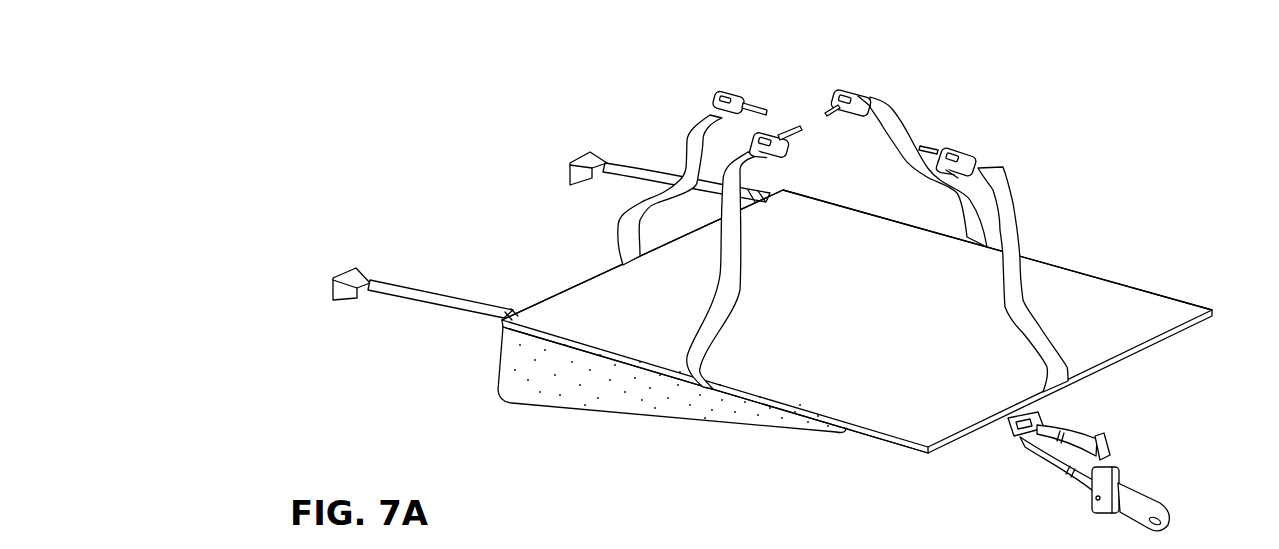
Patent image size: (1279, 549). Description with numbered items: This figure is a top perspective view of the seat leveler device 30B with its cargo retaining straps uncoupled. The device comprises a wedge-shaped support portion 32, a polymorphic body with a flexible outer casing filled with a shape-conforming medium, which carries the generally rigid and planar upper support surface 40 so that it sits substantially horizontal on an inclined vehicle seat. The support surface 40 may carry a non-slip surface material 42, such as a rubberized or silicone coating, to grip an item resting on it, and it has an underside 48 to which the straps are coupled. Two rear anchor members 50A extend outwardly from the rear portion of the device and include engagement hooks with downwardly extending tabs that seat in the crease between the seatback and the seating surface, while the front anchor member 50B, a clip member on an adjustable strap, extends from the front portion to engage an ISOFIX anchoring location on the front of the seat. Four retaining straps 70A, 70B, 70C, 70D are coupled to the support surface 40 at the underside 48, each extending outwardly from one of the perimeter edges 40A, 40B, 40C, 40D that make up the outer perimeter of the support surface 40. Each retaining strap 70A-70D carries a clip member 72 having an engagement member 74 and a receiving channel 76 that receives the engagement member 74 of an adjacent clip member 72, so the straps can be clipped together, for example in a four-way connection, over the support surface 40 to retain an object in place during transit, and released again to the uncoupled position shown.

The seat leveler device 30B is at (1103, 162).
The support portion 32 is at (494, 372).
The upper support surface 40 is at (1130, 282).
The perimeter edge 40A is at (750, 396).
The perimeter edge 40B is at (1132, 354).
The perimeter edge 40C is at (1057, 263).
The perimeter edge 40D is at (580, 281).
The non-slip surface material 42 is at (1160, 313).
The underside 48 is at (862, 434).
The anchor member 50A is at (578, 153).
The anchor member 50B is at (1122, 449).
The retaining strap 70A is at (723, 317).
The retaining strap 70B is at (1005, 213).
The retaining strap 70C is at (890, 128).
The retaining strap 70D is at (698, 130).
The clip member 72 is at (743, 90).
The engagement member 74 is at (789, 128).
The receiving channel 76 is at (860, 97).